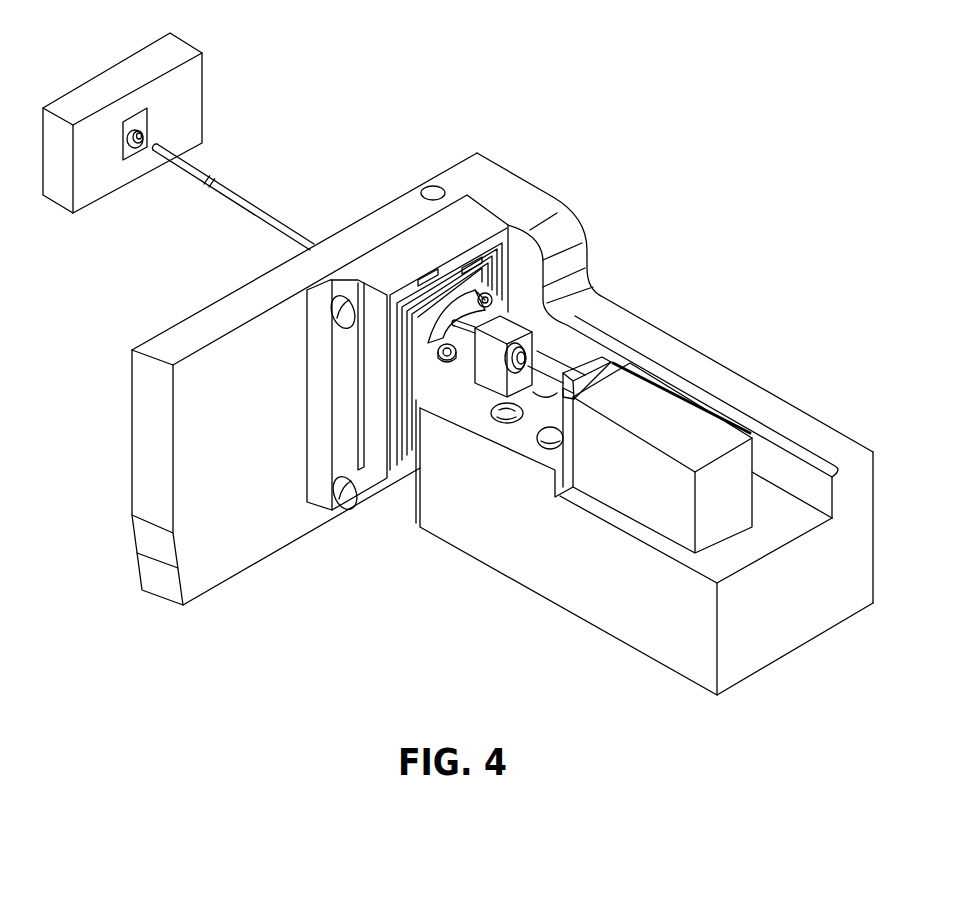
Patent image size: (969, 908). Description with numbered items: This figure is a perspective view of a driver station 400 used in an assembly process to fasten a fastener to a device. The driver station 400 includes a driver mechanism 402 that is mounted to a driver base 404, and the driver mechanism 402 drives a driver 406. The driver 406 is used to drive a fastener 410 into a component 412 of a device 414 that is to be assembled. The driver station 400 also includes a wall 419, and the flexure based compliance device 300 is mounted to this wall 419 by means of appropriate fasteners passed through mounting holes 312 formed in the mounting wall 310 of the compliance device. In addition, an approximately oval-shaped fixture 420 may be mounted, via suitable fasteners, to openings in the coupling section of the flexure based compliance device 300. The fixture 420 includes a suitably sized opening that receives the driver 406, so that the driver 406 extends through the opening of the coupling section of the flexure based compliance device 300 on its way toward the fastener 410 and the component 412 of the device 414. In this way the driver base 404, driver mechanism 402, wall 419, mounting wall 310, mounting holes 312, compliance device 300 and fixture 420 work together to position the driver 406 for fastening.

The flexure based compliance device 300 is at (470, 227).
The mounting wall 310 is at (343, 398).
The mounting holes 312 is at (340, 302).
The driver station 400 is at (683, 251).
The driver mechanism 402 is at (523, 317).
The driver base 404 is at (527, 562).
The driver 406 is at (237, 193).
The fastener 410 is at (147, 138).
The component 412 is at (148, 118).
The device 414 is at (180, 48).
The wall 419 is at (222, 562).
The fixture 420 is at (493, 297).